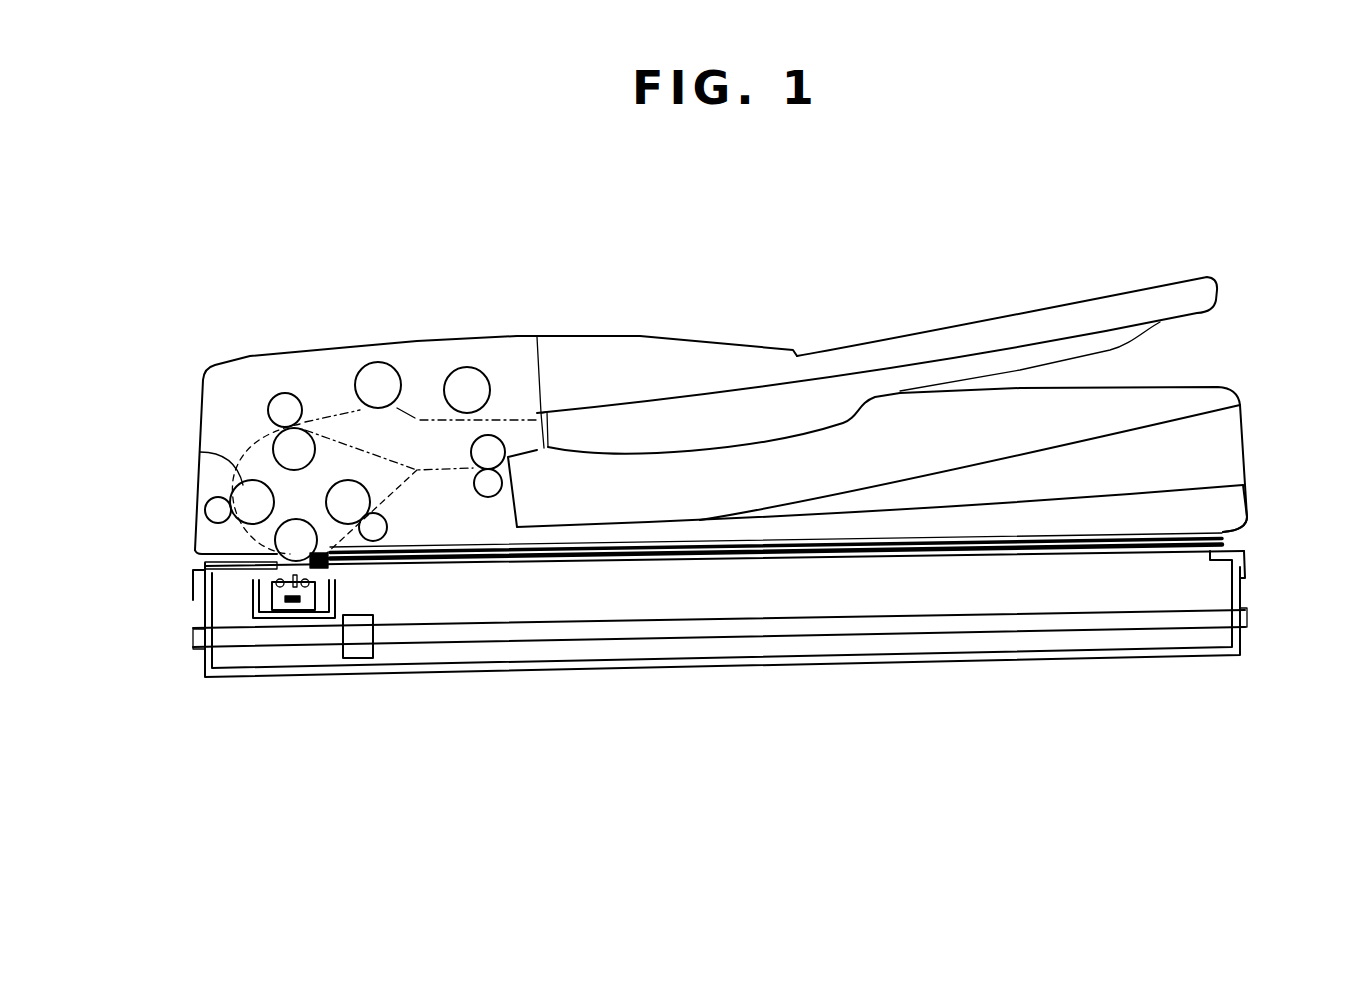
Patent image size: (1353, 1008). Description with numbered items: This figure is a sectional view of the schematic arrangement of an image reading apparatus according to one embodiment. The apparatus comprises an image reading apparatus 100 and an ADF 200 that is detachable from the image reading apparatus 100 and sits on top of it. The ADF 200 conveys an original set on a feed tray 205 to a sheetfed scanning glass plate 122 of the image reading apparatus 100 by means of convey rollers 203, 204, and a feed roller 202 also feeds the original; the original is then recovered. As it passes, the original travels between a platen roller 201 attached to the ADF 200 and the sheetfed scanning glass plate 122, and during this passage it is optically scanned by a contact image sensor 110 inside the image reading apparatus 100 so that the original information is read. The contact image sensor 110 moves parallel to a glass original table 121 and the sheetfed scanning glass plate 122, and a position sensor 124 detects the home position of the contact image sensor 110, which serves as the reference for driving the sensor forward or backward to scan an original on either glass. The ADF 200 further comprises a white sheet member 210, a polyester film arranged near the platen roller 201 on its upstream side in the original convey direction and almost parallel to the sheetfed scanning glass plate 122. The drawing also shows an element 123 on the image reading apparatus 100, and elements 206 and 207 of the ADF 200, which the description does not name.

The image reading apparatus 100 is at (257, 667).
The contact image sensor 110 is at (293, 603).
The glass original table 121 is at (695, 568).
The sheetfed scanning glass plate 122 is at (270, 567).
The ADF reading glass 123 is at (347, 567).
The position sensor 124 is at (376, 637).
The ADF 200 is at (327, 347).
The platen roller 201 is at (277, 543).
The feed roller 202 is at (482, 370).
The convey roller 203 is at (200, 452).
The convey roller 204 is at (368, 485).
The feed tray 205 is at (873, 343).
The discharge tray 206 is at (1043, 452).
The hinge 207 is at (1227, 531).
The white sheet member 210 is at (205, 561).